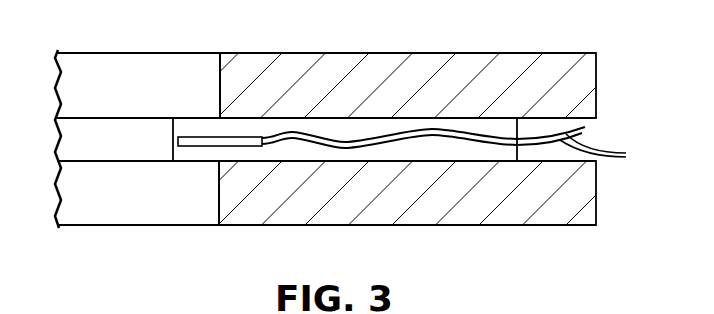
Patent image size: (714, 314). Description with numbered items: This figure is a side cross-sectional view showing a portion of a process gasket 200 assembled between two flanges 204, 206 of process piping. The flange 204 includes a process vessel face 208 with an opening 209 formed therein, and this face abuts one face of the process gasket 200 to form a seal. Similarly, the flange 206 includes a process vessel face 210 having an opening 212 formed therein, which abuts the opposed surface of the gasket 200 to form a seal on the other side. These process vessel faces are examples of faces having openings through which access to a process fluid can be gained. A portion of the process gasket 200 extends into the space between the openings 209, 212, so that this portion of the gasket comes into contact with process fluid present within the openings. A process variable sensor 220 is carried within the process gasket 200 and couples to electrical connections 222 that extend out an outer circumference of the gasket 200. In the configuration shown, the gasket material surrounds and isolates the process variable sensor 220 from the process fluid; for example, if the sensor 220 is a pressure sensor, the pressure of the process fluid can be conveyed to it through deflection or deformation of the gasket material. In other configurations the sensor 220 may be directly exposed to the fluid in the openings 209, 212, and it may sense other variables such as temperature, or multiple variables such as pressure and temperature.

The process gasket 200 is at (193, 124).
The flange 204 is at (508, 65).
The flange 206 is at (555, 218).
The process vessel face 208 is at (347, 118).
The opening 209 is at (152, 95).
The process vessel face 210 is at (295, 162).
The opening 212 is at (152, 206).
The process variable sensor 220 is at (187, 144).
The electrical connections 222 is at (608, 150).